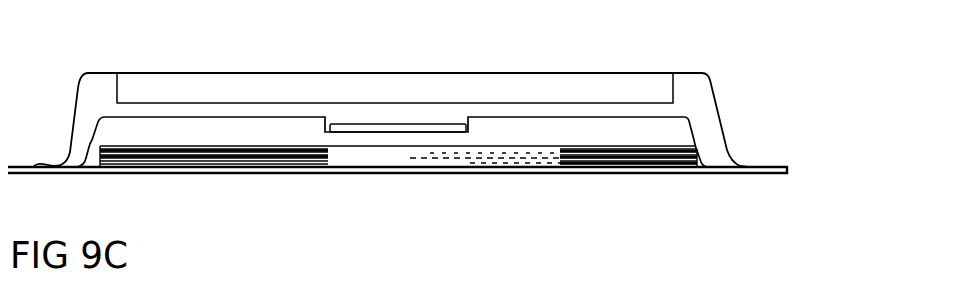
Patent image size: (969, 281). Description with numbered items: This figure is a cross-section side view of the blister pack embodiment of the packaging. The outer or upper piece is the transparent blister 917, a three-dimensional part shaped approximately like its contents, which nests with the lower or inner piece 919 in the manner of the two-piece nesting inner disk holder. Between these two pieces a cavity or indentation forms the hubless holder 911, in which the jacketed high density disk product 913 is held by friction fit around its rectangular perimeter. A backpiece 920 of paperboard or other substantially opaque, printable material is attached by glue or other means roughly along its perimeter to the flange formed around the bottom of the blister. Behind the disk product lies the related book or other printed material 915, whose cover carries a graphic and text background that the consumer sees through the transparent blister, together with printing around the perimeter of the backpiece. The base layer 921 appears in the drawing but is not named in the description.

The hubless holder 911 is at (324, 127).
The disk product 913 is at (405, 125).
The printed material 915 is at (538, 162).
The blister 917 is at (165, 72).
The lower piece 919 is at (691, 128).
The backpiece 920 is at (182, 170).
The base substrate 921 is at (747, 166).